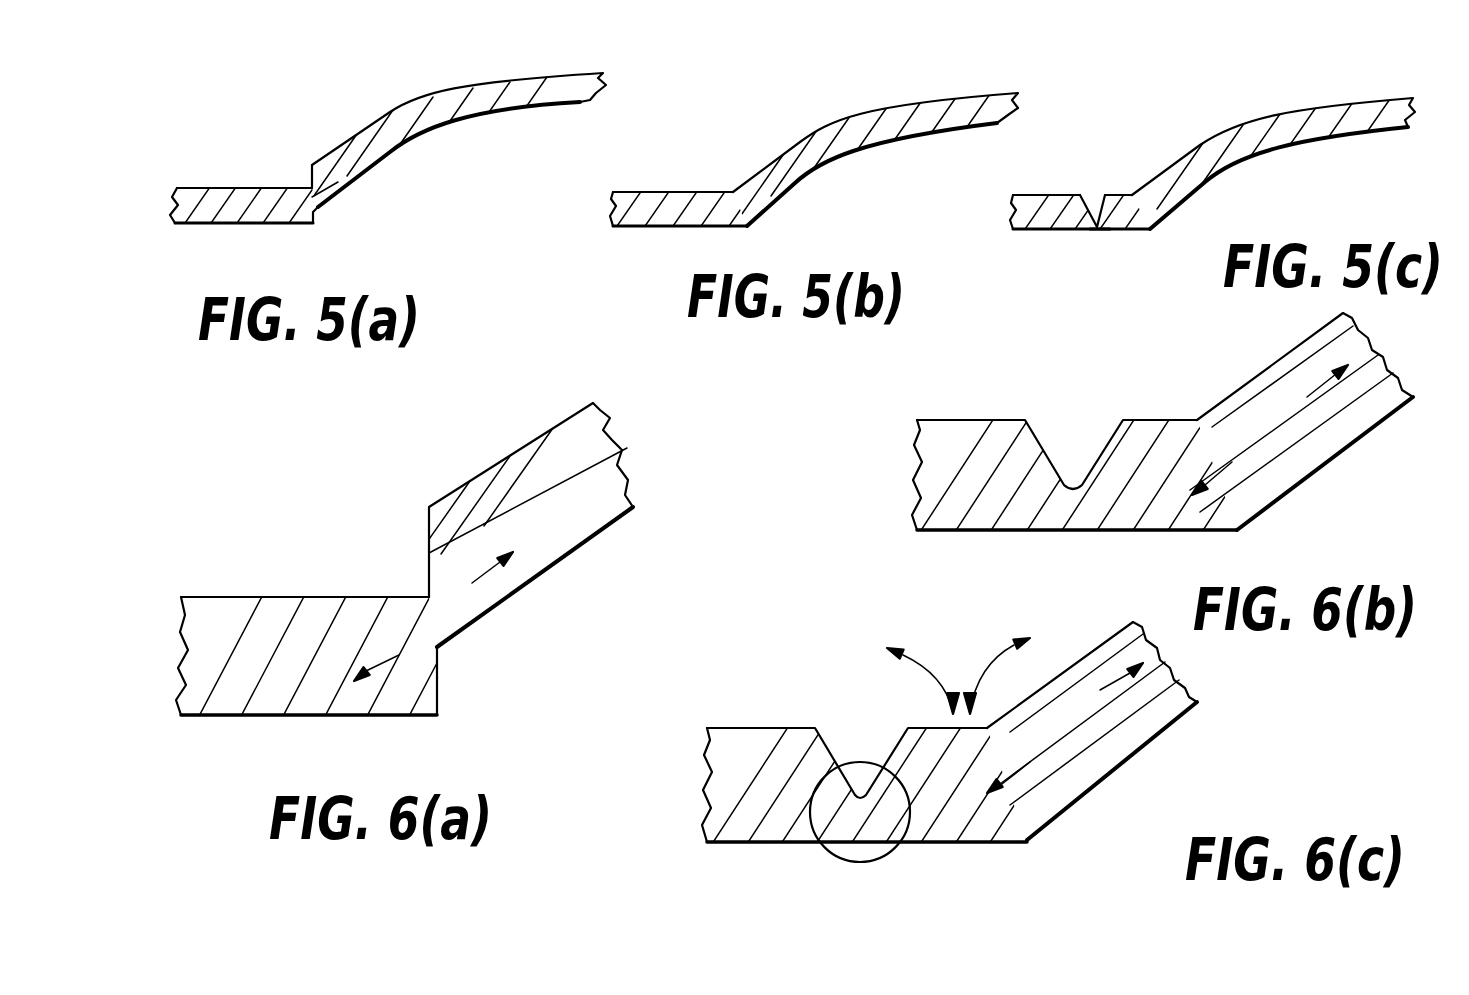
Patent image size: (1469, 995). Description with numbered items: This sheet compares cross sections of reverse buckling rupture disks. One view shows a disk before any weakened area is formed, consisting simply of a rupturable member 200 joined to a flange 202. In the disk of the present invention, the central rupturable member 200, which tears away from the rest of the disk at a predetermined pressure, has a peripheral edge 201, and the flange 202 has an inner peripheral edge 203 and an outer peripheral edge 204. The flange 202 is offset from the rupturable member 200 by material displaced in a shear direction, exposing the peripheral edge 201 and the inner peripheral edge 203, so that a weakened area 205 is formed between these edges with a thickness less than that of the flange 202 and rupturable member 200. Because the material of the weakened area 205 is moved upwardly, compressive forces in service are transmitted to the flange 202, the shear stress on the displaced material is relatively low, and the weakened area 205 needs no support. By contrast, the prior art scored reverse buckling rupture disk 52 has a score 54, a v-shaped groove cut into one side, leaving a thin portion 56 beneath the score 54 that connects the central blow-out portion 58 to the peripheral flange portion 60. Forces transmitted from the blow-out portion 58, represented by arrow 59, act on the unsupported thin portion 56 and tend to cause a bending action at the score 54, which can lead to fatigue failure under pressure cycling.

In FIG. 5A, the rupturable member 200 is at (393, 115).
In FIG. 5B, the rupturable member 200 is at (898, 98).
In FIG. 6A, the rupturable member 200 is at (481, 473).
In FIG. 5A, the peripheral edge 201 is at (310, 172).
In FIG. 5A, the flange 202 is at (218, 225).
In FIG. 5B, the flange 202 is at (697, 228).
In FIG. 6A, the flange 202 is at (305, 717).
In FIG. 5A, the inner peripheral edge 203 is at (177, 207).
In FIG. 5A, the outer peripheral edge 204 is at (317, 212).
In FIG. 5A, the weakened area 205 is at (314, 196).
In FIG. 6A, the weakened area 205 is at (432, 629).
In FIG. 5C, the prior art scored reverse buckling rupture disk 52 is at (1280, 98).
In FIG. 5C, the score 54 is at (1095, 200).
In FIG. 5C, the thin portion 56 is at (1100, 229).
In FIG. 5C, the blow-out portion 58 is at (1320, 137).
In FIG. 6B, the blow-out portion 58 is at (1355, 447).
In FIG. 6C, the blow-out portion 58 is at (1100, 645).
In FIG. 6B, the arrow 59 is at (1220, 473).
In FIG. 6C, the arrow 59 is at (1018, 777).
In FIG. 5C, the peripheral flange portion 60 is at (1067, 230).